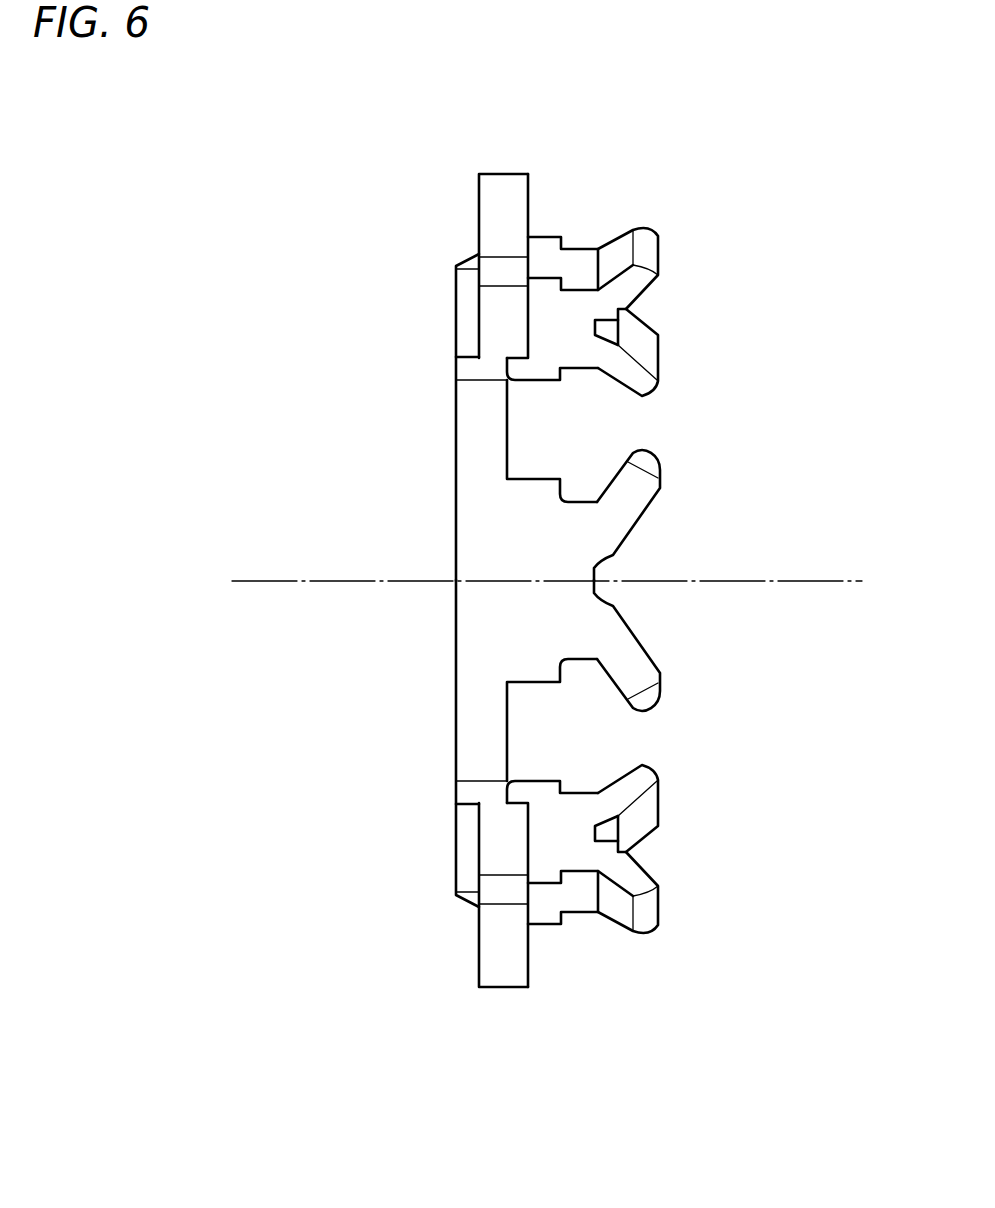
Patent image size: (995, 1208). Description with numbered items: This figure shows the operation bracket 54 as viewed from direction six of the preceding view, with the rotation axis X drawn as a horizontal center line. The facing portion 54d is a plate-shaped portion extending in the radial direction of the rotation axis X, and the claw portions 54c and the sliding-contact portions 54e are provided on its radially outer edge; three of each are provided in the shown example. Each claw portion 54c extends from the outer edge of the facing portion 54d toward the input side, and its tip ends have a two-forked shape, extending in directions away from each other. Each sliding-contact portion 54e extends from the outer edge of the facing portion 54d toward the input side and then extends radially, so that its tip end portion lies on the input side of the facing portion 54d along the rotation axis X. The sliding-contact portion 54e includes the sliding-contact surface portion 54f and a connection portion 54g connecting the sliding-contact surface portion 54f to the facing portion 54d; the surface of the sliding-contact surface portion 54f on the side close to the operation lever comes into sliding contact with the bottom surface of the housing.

The operation bracket 54 is at (681, 152).
The claw portion 54c is at (650, 253).
The facing portion 54d is at (455, 418).
The sliding-contact portion 54e is at (479, 194).
The sliding-contact surface portion 54f is at (530, 197).
The connection portion 54g is at (467, 357).
The rotation axis X is at (817, 580).